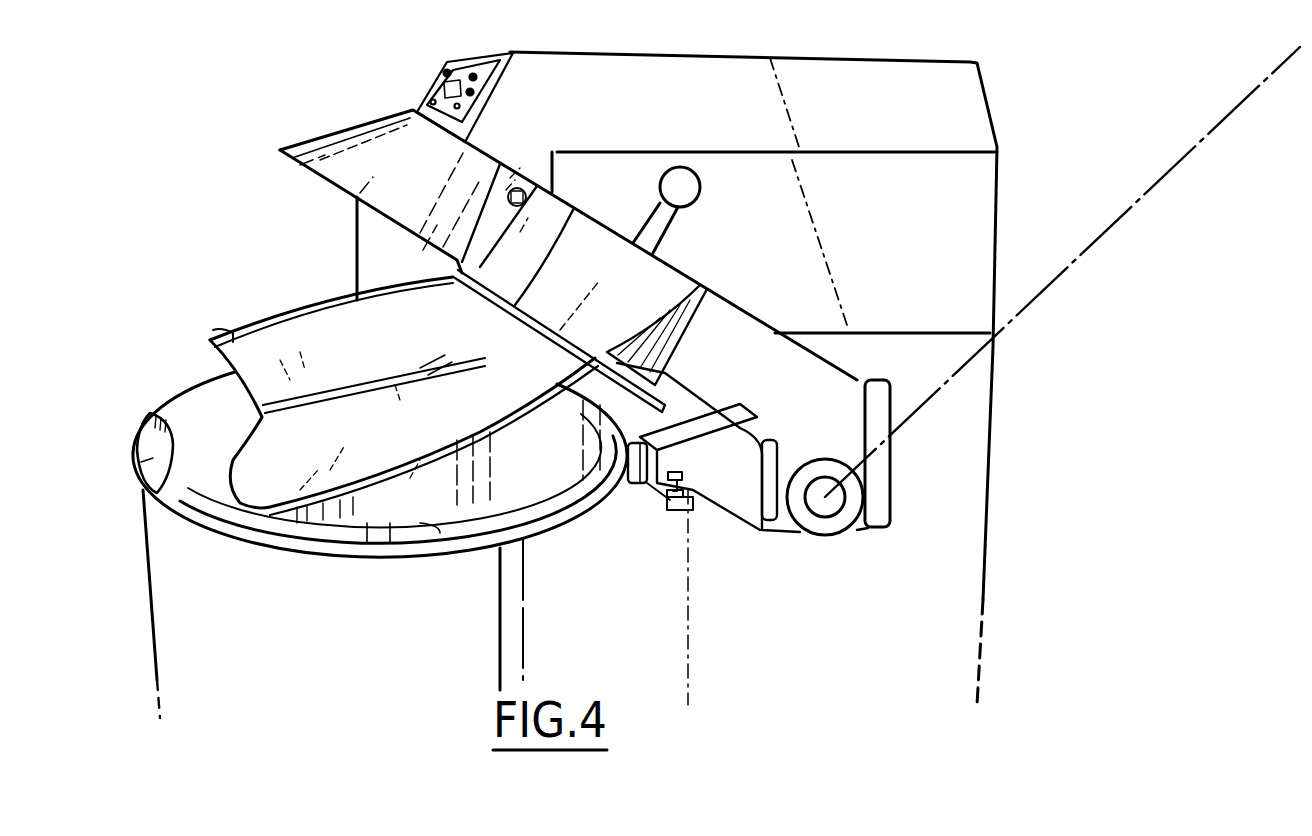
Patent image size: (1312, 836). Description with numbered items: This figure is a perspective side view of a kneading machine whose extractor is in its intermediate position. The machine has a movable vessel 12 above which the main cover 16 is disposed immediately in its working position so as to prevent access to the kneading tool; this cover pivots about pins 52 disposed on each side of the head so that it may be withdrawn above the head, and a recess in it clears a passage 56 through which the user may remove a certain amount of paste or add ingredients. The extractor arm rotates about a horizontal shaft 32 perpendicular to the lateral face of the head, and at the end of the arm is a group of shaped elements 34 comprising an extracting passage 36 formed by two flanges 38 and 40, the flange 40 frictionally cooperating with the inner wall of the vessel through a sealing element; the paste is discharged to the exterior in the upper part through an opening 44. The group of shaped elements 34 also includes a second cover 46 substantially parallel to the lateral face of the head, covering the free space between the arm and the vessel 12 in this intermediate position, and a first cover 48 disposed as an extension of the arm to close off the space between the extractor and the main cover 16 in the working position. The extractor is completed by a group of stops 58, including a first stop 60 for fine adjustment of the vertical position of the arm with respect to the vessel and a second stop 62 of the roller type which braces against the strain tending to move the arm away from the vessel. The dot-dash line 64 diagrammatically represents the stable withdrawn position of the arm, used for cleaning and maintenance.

The movable vessel 12 is at (333, 604).
The main cover 16 is at (200, 403).
The horizontal shaft 32 is at (825, 500).
The group of shaped elements 34 is at (258, 336).
The extracting passage 36 is at (428, 367).
The flange 38 is at (327, 355).
The flange 40 is at (337, 450).
The opening 44 is at (577, 252).
The second cover 46 is at (528, 452).
The first cover 48 is at (363, 160).
The pins 52 is at (690, 190).
The passage 56 is at (133, 462).
The group of stops 58 is at (718, 500).
The first stop 60 is at (666, 508).
The second stop 62 is at (612, 492).
The dot-dash line 64 is at (1128, 205).